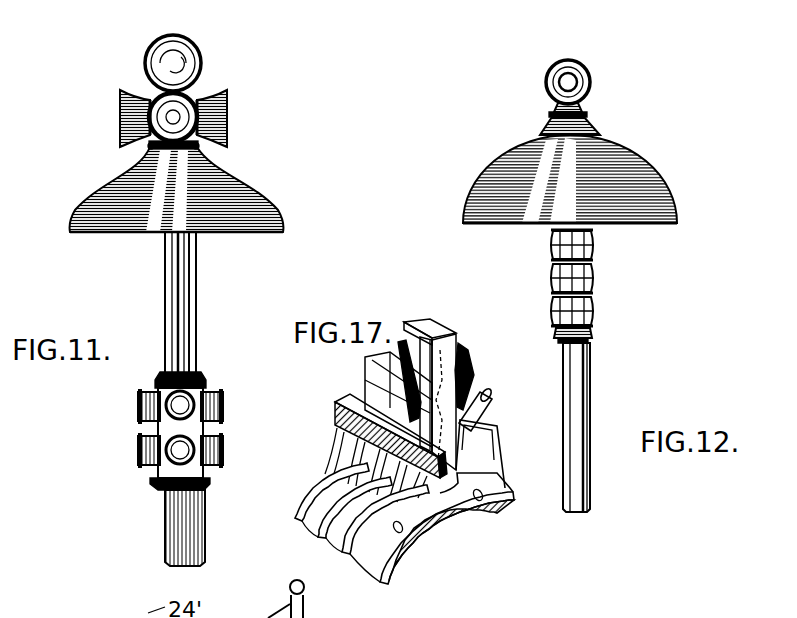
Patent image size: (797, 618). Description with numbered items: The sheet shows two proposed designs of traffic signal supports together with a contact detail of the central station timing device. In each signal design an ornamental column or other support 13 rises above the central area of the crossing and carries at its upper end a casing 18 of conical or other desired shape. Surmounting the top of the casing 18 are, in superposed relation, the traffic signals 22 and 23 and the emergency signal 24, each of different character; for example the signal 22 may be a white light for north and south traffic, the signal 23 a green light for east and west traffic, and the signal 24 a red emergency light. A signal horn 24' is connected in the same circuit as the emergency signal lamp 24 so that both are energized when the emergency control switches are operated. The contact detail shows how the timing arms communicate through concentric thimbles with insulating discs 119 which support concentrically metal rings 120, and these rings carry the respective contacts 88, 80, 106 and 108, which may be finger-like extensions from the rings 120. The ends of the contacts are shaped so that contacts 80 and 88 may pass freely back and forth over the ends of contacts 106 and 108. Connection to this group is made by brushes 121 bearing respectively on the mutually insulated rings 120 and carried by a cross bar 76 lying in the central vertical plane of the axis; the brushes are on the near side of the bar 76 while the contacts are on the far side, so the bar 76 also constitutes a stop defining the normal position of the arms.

In FIG. 11, the ornamental column 13 is at (164, 283).
In FIG. 12, the ornamental column 13 is at (592, 378).
In FIG. 11, the casing 18 is at (272, 201).
In FIG. 12, the casing 18 is at (671, 188).
In FIG. 11, the traffic signal 22 is at (224, 449).
In FIG. 12, the traffic signal 22 is at (598, 308).
In FIG. 11, the traffic signal 23 is at (224, 405).
In FIG. 12, the traffic signal 23 is at (597, 277).
In FIG. 11, the emergency signal 24 is at (192, 61).
In FIG. 12, the emergency signal 24 is at (593, 245).
In FIG. 11, the signal horn 24' is at (195, 119).
In FIG. 12, the signal horn 24' is at (587, 97).
In FIG. 17, the cross bar 76 is at (338, 408).
In FIG. 17, the contact 80 is at (470, 353).
In FIG. 17, the contact 88 is at (403, 385).
In FIG. 17, the contact 106 is at (493, 408).
In FIG. 17, the contact 108 is at (438, 345).
In FIG. 17, the insulating disc 119 is at (483, 530).
In FIG. 17, the metal ring 120 is at (332, 502).
In FIG. 17, the brush 121 is at (353, 452).